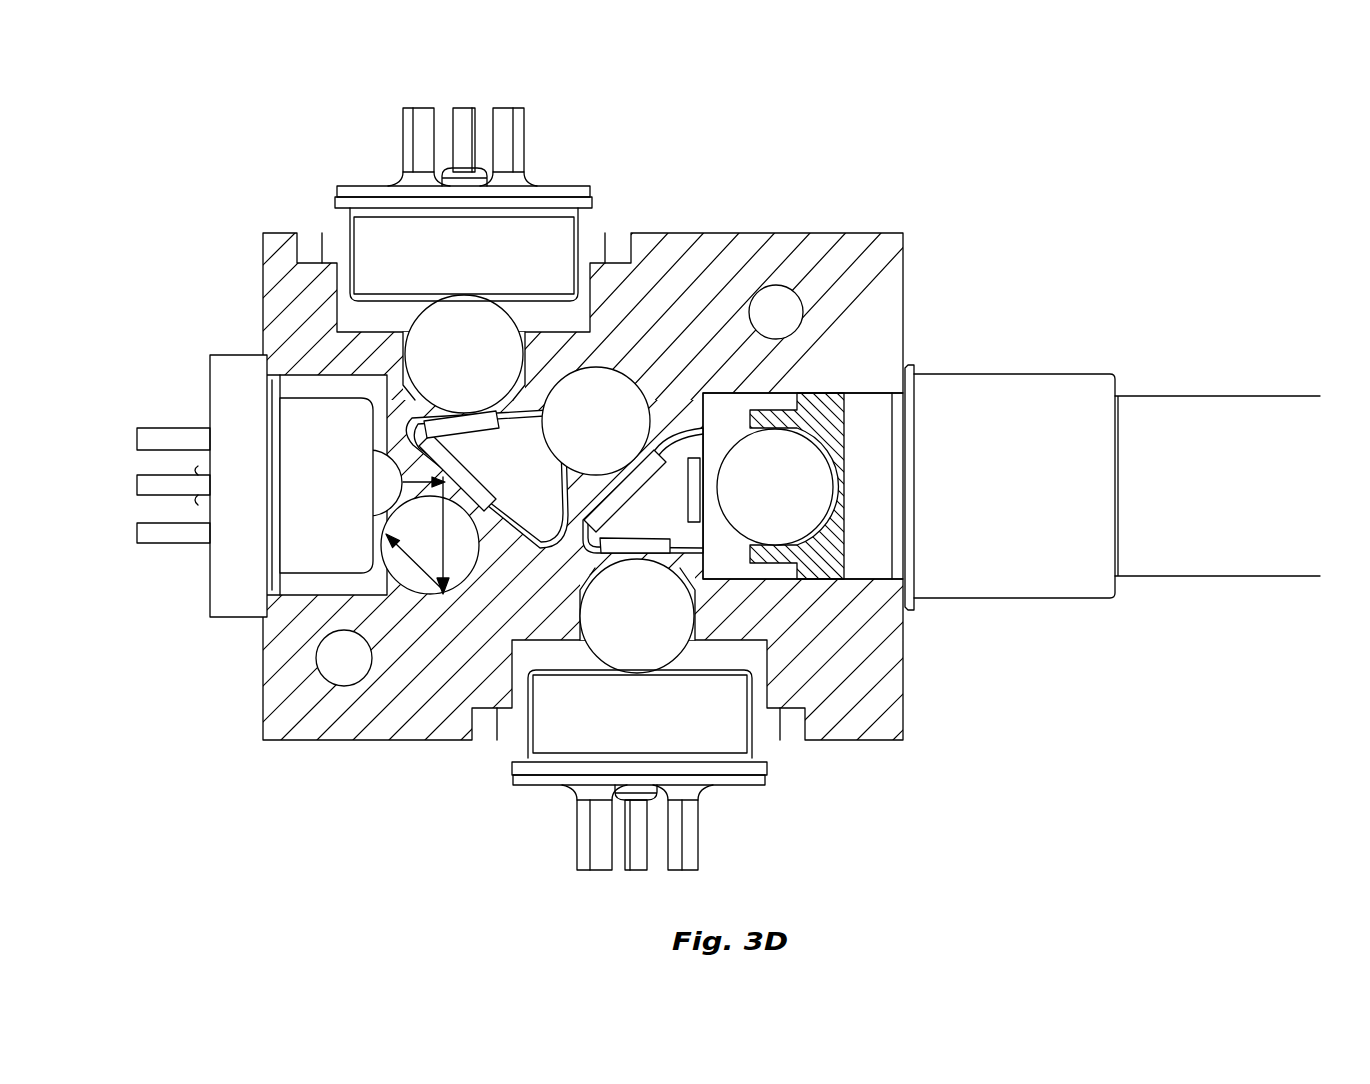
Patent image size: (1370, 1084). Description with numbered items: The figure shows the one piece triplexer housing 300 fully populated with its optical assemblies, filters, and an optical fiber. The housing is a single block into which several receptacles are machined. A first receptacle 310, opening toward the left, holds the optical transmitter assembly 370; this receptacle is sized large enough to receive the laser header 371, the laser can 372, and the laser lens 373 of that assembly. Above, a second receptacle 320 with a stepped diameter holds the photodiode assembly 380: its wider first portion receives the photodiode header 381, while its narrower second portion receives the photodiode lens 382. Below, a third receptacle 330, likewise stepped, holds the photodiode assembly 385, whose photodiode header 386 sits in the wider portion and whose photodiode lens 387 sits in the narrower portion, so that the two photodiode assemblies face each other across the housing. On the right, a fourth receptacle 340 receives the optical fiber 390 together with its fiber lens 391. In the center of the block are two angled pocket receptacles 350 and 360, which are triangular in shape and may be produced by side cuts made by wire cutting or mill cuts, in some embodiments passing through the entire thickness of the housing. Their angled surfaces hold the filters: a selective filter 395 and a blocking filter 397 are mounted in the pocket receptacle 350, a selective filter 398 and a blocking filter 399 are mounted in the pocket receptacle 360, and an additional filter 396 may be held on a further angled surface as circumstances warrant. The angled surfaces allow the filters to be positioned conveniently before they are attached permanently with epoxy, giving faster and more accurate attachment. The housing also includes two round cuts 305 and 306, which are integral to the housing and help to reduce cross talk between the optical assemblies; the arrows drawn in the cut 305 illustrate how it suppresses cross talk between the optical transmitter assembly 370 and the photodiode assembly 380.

The one piece triplexer housing 300 is at (835, 135).
The cut 305 is at (340, 660).
The cut 306 is at (635, 450).
The first receptacle 310 is at (287, 608).
The second receptacle 320 is at (615, 235).
The third receptacle 330 is at (510, 720).
The fourth receptacle 340 is at (895, 615).
The angled pocket receptacle 350 is at (665, 540).
The angled pocket receptacle 360 is at (600, 556).
The optical transmitter assembly 370 is at (245, 338).
The laser header 371 is at (263, 593).
The laser can 372 is at (339, 500).
The laser lens 373 is at (381, 502).
The photodiode assembly 380 is at (365, 150).
The photodiode header 381 is at (548, 200).
The photodiode lens 382 is at (500, 350).
The photodiode assembly 385 is at (730, 787).
The photodiode header 386 is at (590, 733).
The photodiode lens 387 is at (637, 657).
The optical fiber 390 is at (925, 372).
The fiber lens 391 is at (805, 470).
The selective filter 395 is at (703, 478).
The filter 396 is at (780, 428).
The blocking filter 397 is at (527, 532).
The selective filter 398 is at (403, 600).
The blocking filter 399 is at (430, 405).